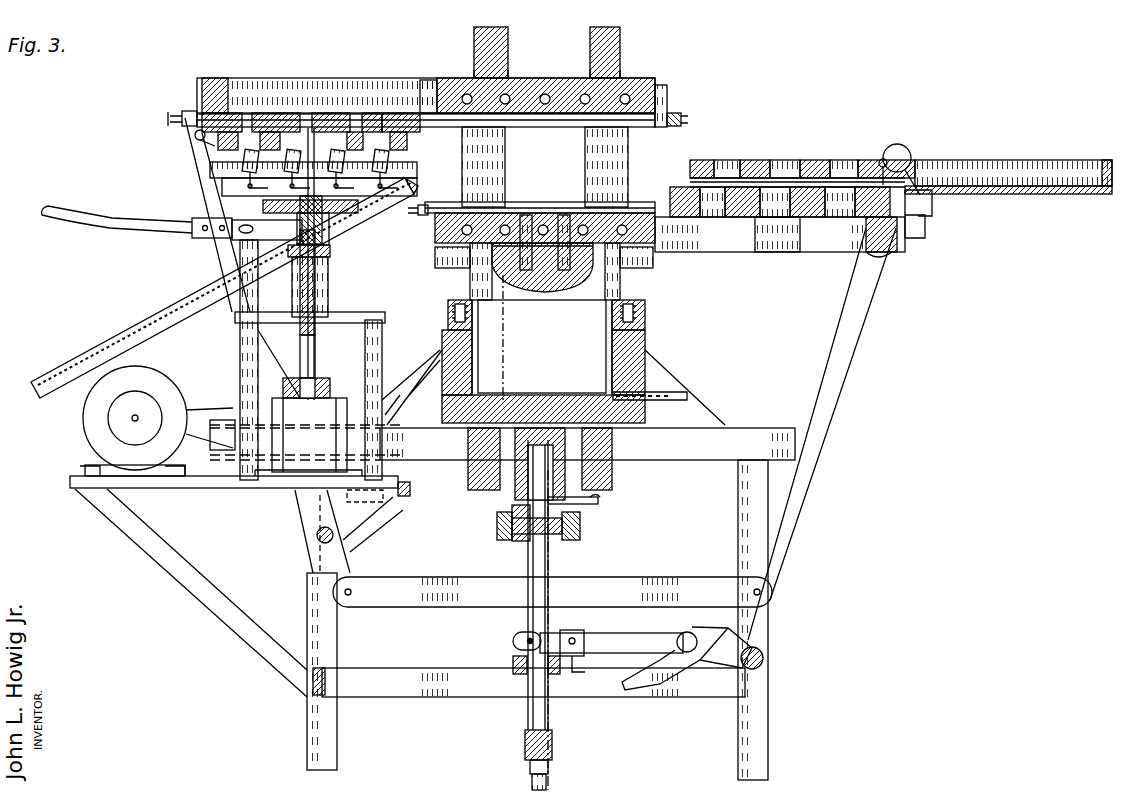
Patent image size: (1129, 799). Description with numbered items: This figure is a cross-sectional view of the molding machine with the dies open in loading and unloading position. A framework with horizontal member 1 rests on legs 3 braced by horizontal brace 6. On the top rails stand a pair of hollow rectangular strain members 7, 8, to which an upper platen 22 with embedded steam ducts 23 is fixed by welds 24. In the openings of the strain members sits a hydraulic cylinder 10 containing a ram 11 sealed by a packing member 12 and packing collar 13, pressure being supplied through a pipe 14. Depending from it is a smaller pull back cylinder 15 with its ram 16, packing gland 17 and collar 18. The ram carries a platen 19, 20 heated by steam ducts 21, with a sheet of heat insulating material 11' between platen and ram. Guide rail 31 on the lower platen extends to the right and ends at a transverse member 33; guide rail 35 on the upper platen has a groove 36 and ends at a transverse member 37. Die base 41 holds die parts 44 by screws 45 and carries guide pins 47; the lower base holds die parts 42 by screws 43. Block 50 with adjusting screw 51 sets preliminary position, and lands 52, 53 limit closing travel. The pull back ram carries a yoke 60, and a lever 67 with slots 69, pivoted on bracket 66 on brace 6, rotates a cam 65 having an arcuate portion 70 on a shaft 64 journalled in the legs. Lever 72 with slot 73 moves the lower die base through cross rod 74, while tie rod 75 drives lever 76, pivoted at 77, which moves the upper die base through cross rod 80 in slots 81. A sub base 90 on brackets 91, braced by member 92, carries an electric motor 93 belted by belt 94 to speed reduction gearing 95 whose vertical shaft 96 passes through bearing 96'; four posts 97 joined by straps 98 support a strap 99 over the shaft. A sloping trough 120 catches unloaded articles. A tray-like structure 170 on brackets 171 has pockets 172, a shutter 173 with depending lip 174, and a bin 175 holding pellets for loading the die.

The horizontal member 1 is at (750, 440).
The leg 3 is at (312, 716).
The horizontal brace 6 is at (293, 553).
The strain member 7 is at (508, 36).
The strain member 8 is at (622, 37).
The hydraulic cylinder 10 is at (645, 346).
The ram 11 is at (559, 271).
The heat insulating material 11' is at (520, 337).
The packing member 12 is at (644, 322).
The packing collar 13 is at (614, 306).
The pipe 14 is at (675, 393).
The pull back cylinder 15 is at (517, 492).
The ram 16 is at (548, 556).
The packing gland 17 is at (582, 520).
The collar 18 is at (520, 540).
The platen 19 is at (600, 500).
The platen 20 is at (428, 240).
The ducts 21 is at (578, 214).
The platen 22 is at (652, 90).
The steam ducts 23 is at (546, 96).
The welds 24 is at (472, 80).
The guide rail 31 is at (752, 243).
The transverse member 33 is at (882, 258).
The guide rail 35 is at (360, 80).
The groove 36 is at (627, 122).
The transverse member 37 is at (216, 80).
The die base 41 is at (420, 130).
The die parts 42 is at (718, 217).
The screws 43 is at (858, 210).
The die parts 44 is at (270, 125).
The screws 45 is at (418, 128).
The guide pins 47 is at (212, 176).
The block 50 is at (197, 82).
The adjusting screw 51 is at (180, 114).
The stop block 52 is at (795, 240).
The stop block 53 is at (312, 138).
The yoke 60 is at (523, 742).
The shaft 64 is at (764, 656).
The cam 65 is at (715, 652).
The bracket 66 is at (574, 672).
The lever 67 is at (648, 636).
The slots 69 is at (515, 638).
The arcuate portion 70 is at (658, 676).
The lever 72 is at (830, 420).
The slots 73 is at (902, 195).
The cross rod 74 is at (925, 222).
The tie rod 75 is at (390, 604).
The lever 76 is at (230, 262).
The pivot 77 is at (334, 538).
The cross rod 80 is at (196, 134).
The slots 81 is at (200, 142).
The sub base 90 is at (243, 492).
The brackets 91 is at (410, 494).
The bracing member 92 is at (157, 548).
The electric motor 93 is at (100, 412).
The belt 94 is at (202, 410).
The speed reduction gearing 95 is at (318, 423).
The shaft 96 is at (327, 304).
The bearing 96' is at (321, 372).
The posts 97 is at (240, 348).
The straps 98 is at (343, 317).
The strap 99 is at (322, 258).
The trough 120 is at (68, 373).
The tray-like structure 170 is at (968, 185).
The brackets 171 is at (928, 202).
The pockets 172 is at (726, 160).
The shutter 173 is at (772, 184).
The lip 174 is at (883, 160).
The bin 175 is at (1045, 178).